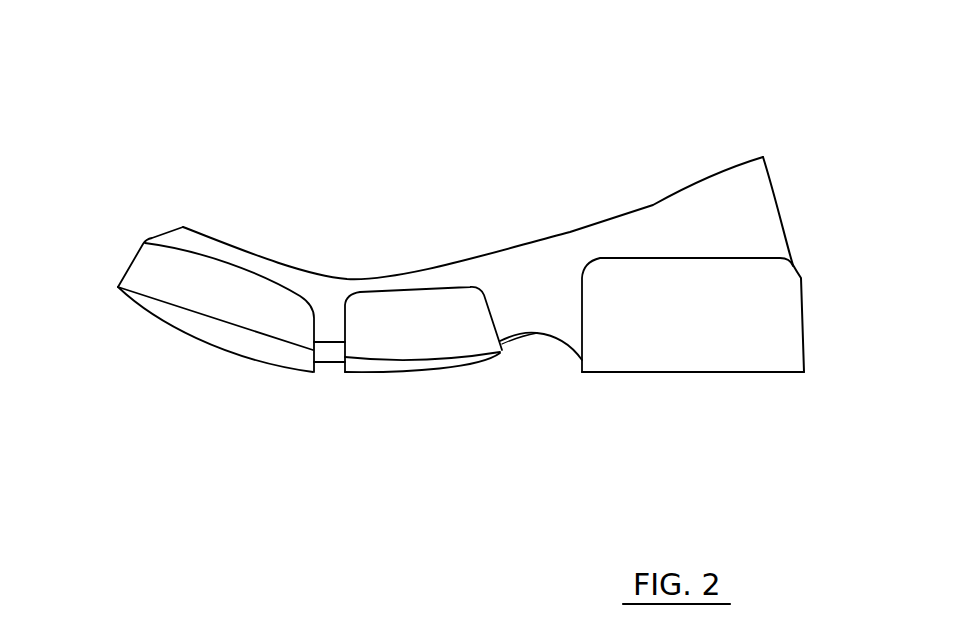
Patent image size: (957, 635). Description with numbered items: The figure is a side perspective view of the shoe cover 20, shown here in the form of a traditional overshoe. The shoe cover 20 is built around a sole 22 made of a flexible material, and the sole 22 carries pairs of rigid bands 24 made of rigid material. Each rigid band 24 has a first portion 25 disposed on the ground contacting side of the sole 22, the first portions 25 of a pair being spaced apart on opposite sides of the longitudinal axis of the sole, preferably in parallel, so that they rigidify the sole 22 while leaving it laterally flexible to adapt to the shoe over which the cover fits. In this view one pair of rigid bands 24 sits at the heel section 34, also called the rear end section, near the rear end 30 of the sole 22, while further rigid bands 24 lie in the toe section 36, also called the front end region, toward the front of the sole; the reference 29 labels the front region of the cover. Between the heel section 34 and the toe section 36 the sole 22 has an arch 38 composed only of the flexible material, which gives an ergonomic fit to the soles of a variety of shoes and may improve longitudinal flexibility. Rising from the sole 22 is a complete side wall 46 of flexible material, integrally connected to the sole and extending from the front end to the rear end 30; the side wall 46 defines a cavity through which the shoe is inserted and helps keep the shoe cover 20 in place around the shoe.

The shoe cover 20 is at (672, 142).
The sole 22 is at (668, 382).
The rigid bands 24 is at (240, 318).
The first portion 25 is at (180, 323).
The toe end 29 is at (130, 262).
The rear end 30 is at (800, 277).
The heel section 34 is at (815, 470).
The toe section 36 is at (495, 550).
The arch 38 is at (575, 365).
The side wall 46 is at (537, 265).